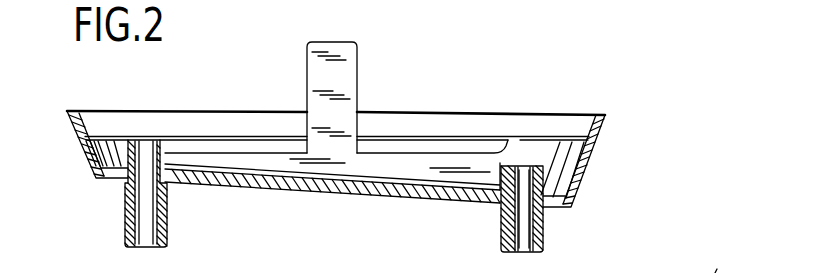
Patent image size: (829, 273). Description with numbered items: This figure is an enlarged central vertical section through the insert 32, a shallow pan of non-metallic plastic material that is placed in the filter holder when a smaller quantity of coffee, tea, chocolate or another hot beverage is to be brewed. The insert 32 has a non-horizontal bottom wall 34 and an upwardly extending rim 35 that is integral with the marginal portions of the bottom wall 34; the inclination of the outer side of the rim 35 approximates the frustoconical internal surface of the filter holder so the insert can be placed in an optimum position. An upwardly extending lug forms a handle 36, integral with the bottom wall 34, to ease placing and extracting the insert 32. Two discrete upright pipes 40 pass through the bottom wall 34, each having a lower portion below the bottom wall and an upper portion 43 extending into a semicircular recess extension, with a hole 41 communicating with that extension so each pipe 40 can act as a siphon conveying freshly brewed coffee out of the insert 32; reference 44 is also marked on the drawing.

The insert 32 is at (297, 196).
The bottom wall 34 is at (387, 198).
The rim 35 is at (597, 163).
The handle 36 is at (338, 79).
The upright pipe 40 is at (167, 213).
The hole 41 is at (523, 229).
The upper portion 43 is at (117, 138).
The connector 44 is at (722, 258).